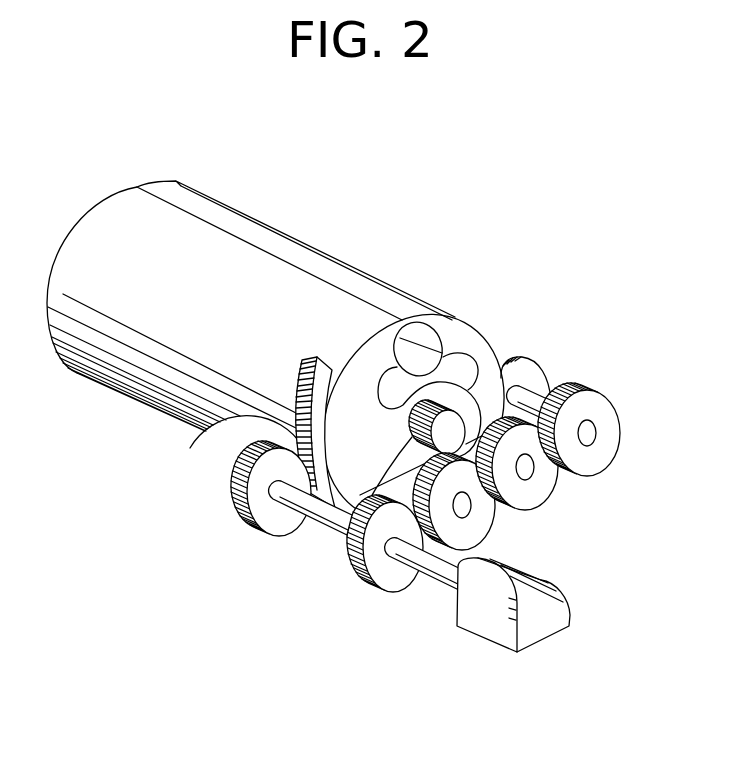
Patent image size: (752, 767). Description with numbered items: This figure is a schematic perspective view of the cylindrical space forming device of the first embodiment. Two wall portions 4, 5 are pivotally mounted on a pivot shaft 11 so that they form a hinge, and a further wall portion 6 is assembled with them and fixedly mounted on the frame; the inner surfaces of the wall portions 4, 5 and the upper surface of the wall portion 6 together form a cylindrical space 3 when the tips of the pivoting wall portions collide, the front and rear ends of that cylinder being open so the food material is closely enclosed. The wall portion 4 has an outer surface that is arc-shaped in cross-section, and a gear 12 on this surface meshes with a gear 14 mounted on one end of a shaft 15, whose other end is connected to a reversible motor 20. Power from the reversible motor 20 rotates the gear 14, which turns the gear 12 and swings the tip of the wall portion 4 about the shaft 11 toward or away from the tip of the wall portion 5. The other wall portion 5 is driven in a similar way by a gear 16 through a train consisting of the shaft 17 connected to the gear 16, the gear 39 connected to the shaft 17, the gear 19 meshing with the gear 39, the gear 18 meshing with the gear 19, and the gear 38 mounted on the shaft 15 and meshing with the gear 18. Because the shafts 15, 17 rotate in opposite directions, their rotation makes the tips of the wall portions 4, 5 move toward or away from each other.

The cylindrical space 3 is at (433, 336).
The wall portion 4 is at (160, 395).
The wall portion 5 is at (298, 252).
The wall portion 6 is at (457, 363).
The pivot shaft 11 is at (360, 522).
The gear 12 is at (233, 443).
The gear 14 is at (232, 505).
The shaft 15 is at (330, 517).
The gear 16 is at (513, 358).
The shaft 17 is at (542, 405).
The gear 18 is at (488, 523).
The gear 19 is at (543, 490).
The reversible motor 20 is at (477, 637).
The gear 38 is at (363, 578).
The gear 39 is at (598, 463).